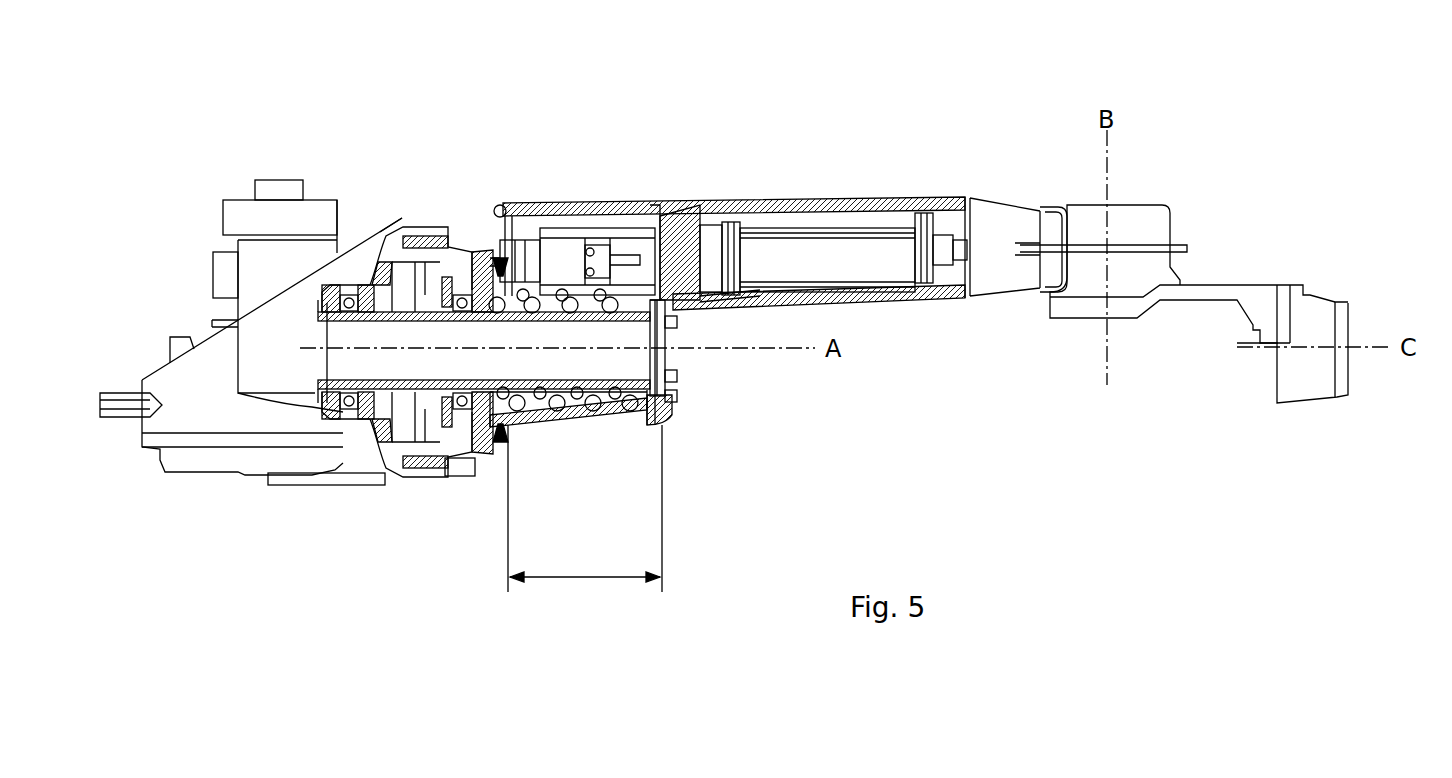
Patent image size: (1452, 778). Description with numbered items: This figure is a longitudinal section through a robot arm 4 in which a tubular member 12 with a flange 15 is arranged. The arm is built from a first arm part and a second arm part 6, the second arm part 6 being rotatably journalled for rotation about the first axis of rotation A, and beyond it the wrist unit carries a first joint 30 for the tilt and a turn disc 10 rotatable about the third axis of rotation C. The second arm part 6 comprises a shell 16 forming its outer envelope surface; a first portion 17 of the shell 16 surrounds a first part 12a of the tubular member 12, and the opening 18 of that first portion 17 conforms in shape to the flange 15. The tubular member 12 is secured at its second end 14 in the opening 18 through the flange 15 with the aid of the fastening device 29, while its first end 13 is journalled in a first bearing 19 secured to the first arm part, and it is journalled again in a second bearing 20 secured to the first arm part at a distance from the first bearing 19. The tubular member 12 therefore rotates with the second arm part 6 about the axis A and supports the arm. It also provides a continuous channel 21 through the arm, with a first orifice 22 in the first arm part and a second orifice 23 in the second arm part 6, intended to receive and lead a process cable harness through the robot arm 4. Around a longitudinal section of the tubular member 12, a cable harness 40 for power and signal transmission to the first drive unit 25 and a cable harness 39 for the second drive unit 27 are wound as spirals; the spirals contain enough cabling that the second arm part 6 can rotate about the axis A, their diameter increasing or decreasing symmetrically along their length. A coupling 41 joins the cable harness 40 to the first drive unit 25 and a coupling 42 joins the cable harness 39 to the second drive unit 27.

The robot arm 4 is at (735, 72).
The second arm part 6 is at (672, 210).
The turn disc 10 is at (1343, 385).
The tubular member 12 is at (368, 300).
The first part of the tubular member 12a is at (585, 508).
The first end 13 is at (327, 407).
The second end 14 is at (660, 420).
The flange 15 is at (665, 410).
The shell 16 is at (873, 200).
The first portion 17 is at (597, 432).
The opening 18 is at (660, 340).
The first bearing 19 is at (350, 290).
The second bearing 20 is at (460, 248).
The channel 21 is at (385, 365).
The first orifice 22 is at (337, 337).
The second orifice 23 is at (663, 423).
The first drive unit 25 is at (603, 257).
The second drive unit 27 is at (795, 242).
The fastening device 29 is at (677, 392).
The first joint 30 is at (1140, 222).
The cable harness 39 is at (627, 407).
The cable harness 40 is at (542, 402).
The coupling 41 is at (523, 287).
The coupling 42 is at (747, 303).